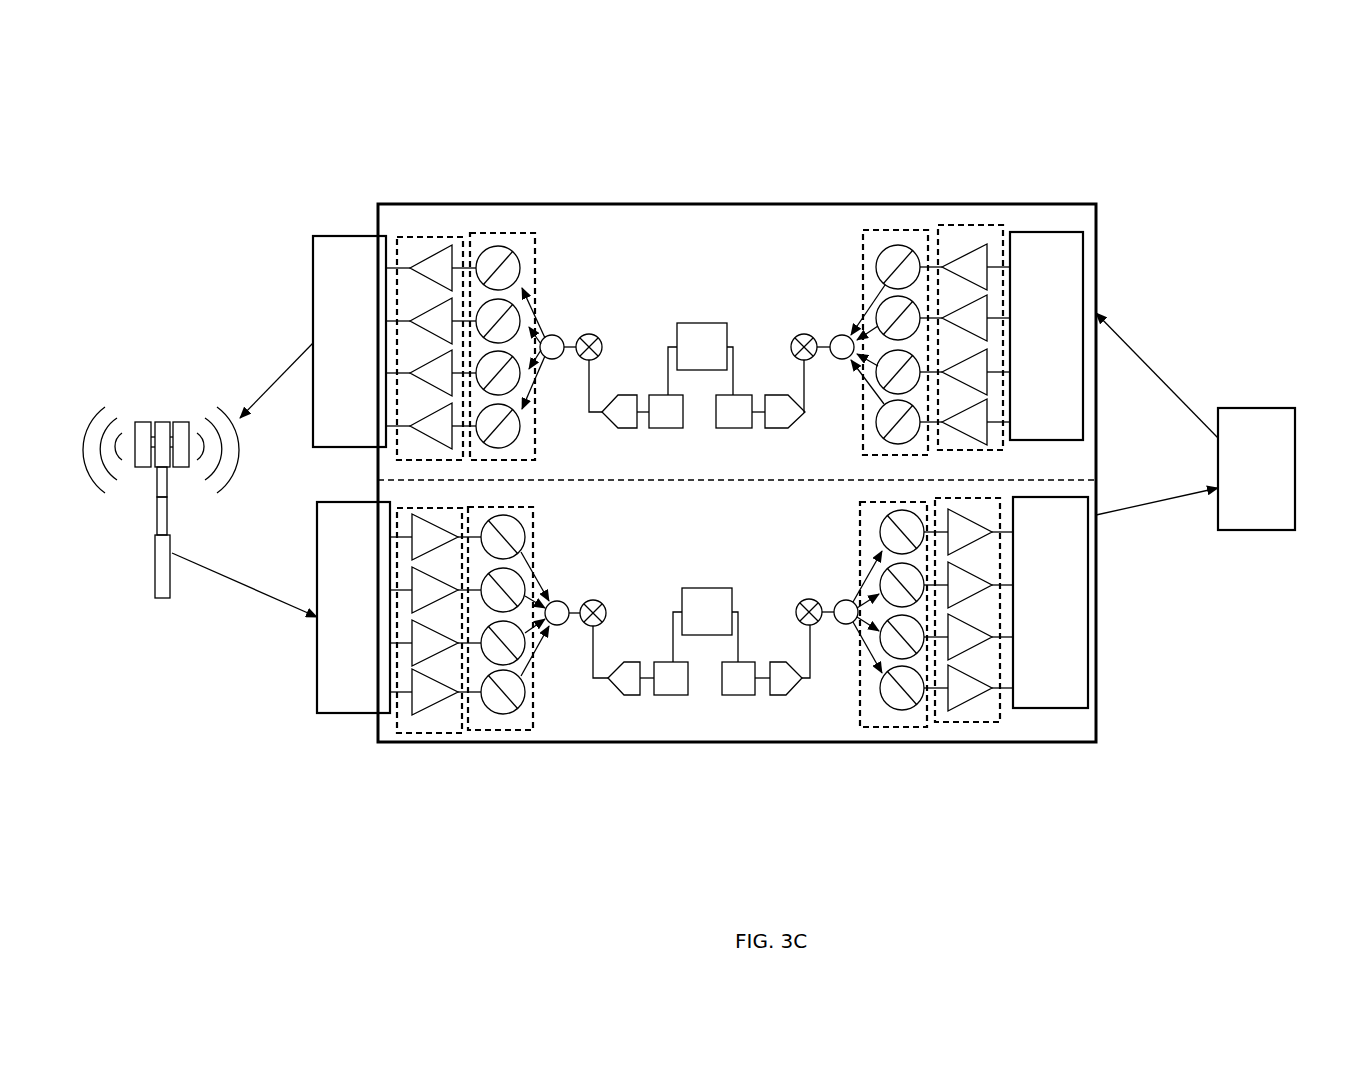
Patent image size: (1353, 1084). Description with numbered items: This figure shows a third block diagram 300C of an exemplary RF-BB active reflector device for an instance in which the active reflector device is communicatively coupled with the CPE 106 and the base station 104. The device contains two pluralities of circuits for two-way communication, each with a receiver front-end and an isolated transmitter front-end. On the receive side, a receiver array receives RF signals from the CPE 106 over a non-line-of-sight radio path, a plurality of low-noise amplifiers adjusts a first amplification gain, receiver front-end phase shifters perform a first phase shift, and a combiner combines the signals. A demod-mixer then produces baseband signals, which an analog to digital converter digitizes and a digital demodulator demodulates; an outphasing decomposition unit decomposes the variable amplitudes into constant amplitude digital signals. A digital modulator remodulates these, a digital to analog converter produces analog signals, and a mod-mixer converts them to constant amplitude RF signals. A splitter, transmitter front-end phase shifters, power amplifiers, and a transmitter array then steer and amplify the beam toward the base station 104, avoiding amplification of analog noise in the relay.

The base station 104 is at (157, 565).
The CPE 106 is at (1233, 407).
The third block diagram 300C is at (1224, 764).